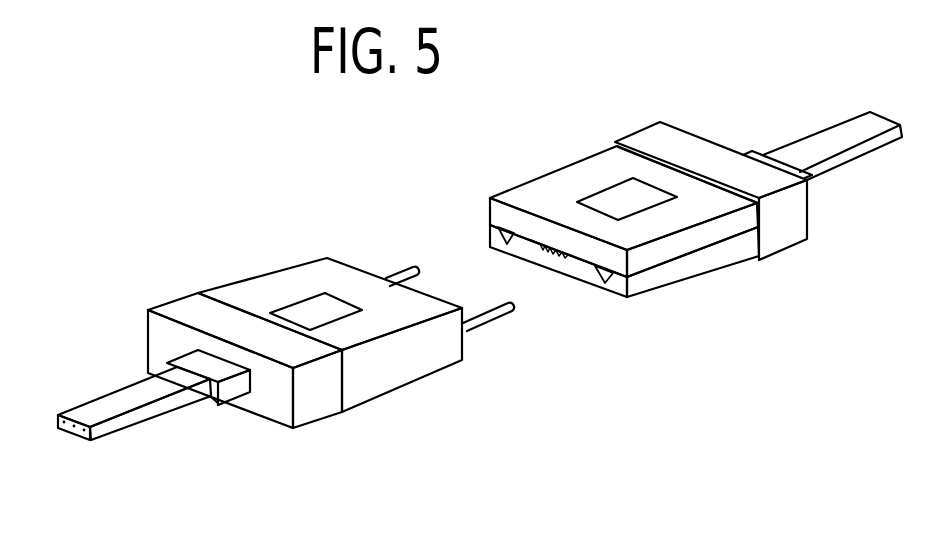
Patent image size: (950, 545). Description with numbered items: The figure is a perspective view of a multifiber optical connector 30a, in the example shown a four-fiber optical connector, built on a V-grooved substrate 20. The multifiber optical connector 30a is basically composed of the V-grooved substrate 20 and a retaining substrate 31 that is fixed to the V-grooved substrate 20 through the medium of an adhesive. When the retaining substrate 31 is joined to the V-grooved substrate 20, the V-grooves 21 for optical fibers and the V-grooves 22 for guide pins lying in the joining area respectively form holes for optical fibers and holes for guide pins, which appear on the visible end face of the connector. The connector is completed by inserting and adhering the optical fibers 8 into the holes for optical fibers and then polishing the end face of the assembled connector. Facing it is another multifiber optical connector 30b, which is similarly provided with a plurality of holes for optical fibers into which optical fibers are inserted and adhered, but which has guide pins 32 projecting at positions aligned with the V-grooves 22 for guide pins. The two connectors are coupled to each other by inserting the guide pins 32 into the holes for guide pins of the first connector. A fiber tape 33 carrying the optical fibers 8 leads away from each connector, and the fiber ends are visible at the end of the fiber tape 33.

The multifiber optical connector 30a is at (670, 202).
The multifiber optical connector 30b is at (300, 329).
The V-grooved substrate 20 is at (599, 261).
The retaining substrate 31 is at (697, 233).
The V-grooves for optical fibers 21 is at (542, 244).
The V-grooves for guide pins 22 is at (490, 238).
The optical fibers 8 is at (560, 257).
The guide pins 32 is at (488, 322).
The fiber tape 33 is at (140, 417).